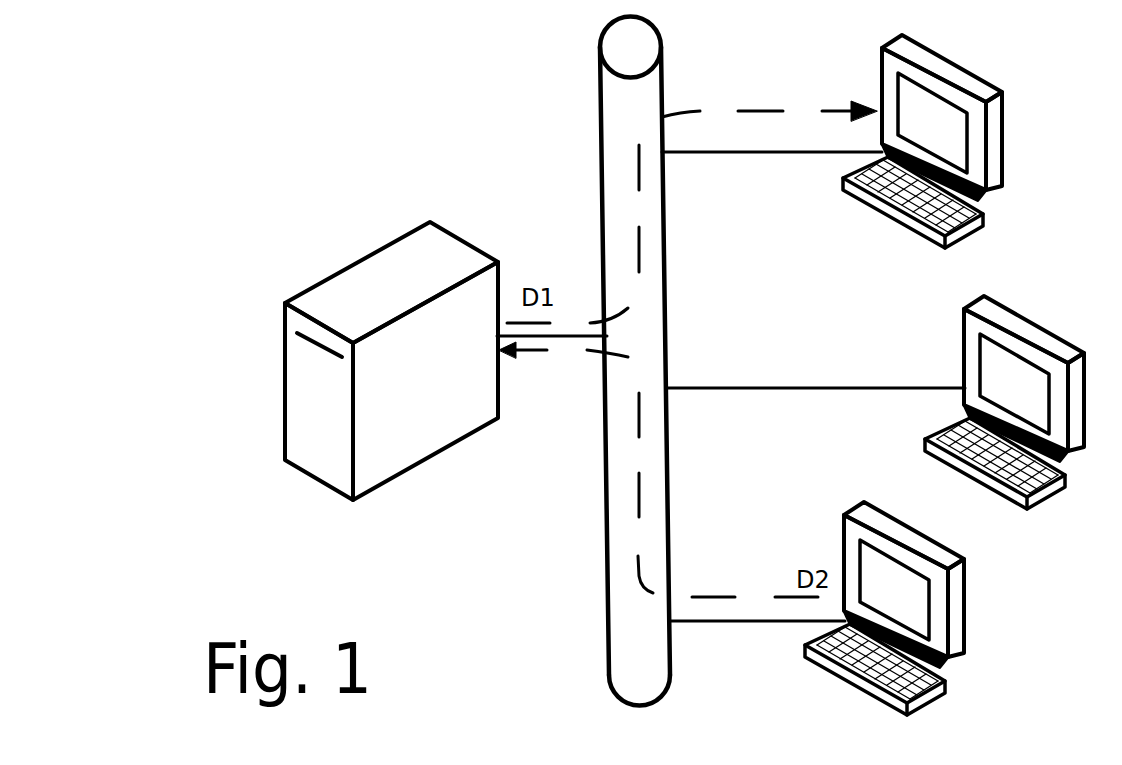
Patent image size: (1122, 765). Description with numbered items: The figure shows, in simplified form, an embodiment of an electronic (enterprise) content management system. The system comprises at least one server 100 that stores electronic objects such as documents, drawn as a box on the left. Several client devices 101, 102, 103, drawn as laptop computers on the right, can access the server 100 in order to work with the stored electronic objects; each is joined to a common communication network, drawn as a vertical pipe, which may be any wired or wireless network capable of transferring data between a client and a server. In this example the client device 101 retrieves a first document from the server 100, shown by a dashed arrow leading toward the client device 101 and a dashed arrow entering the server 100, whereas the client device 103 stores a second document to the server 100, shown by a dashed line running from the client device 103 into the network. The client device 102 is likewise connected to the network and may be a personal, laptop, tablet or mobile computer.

The server 100 is at (391, 361).
The client device 101 is at (975, 78).
The client device 102 is at (1008, 312).
The client device 103 is at (963, 630).